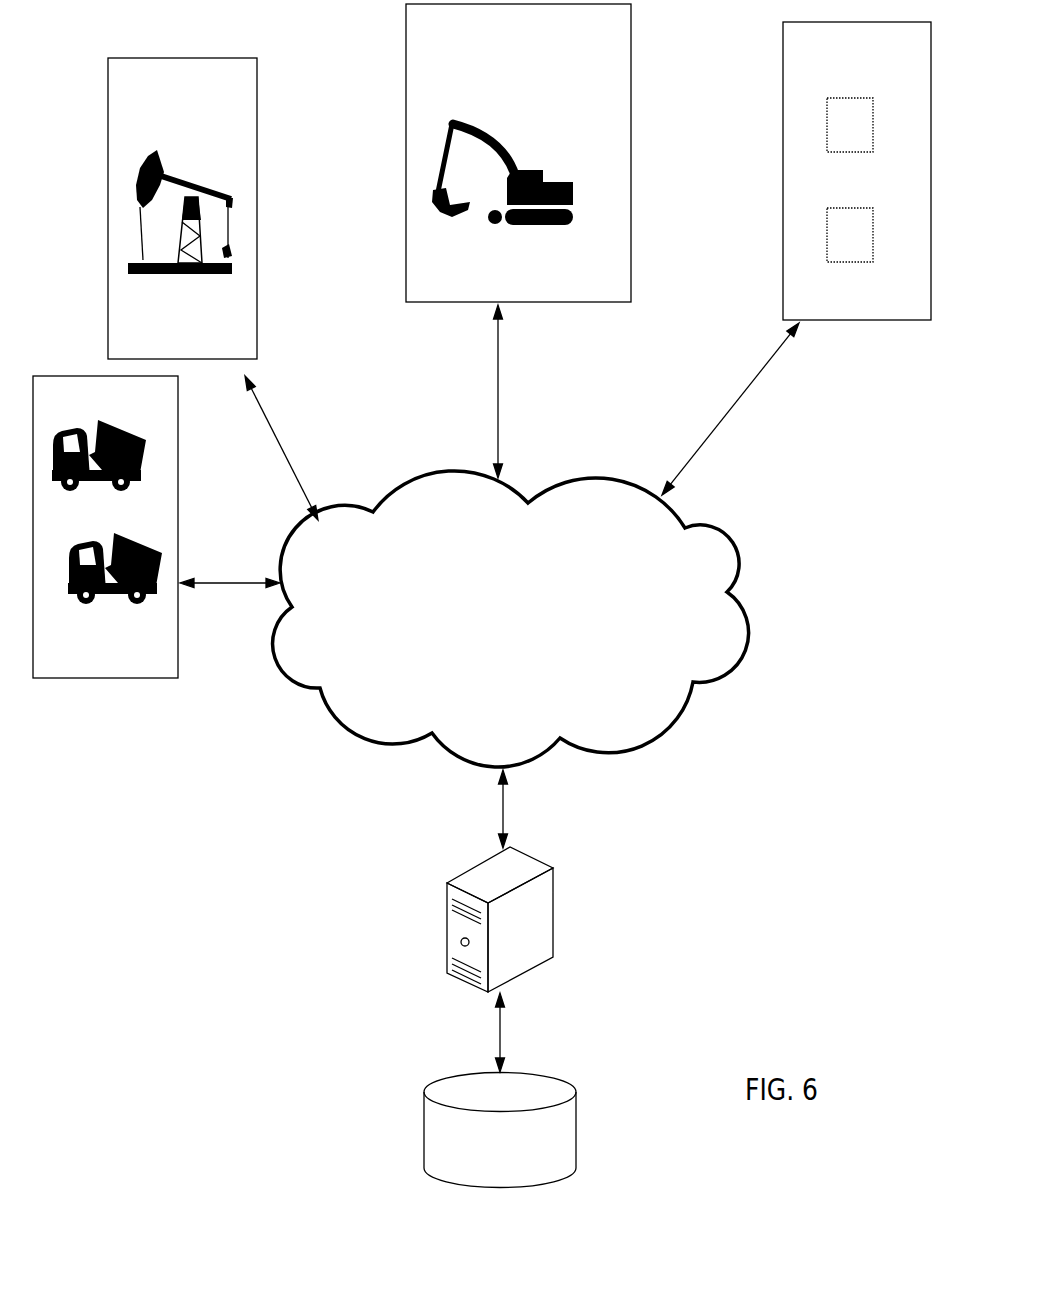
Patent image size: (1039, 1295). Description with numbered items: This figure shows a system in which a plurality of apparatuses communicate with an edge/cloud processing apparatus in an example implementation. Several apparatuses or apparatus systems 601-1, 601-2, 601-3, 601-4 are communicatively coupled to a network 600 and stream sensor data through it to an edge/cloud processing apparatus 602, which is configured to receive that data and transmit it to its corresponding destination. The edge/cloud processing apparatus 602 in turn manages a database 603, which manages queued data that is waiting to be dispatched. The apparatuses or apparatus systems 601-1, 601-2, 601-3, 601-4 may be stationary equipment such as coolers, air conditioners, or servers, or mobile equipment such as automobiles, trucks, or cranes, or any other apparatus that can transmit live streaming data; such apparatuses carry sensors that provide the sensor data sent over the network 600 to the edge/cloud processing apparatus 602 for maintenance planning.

The network 600 is at (535, 647).
The apparatus or apparatus system 601-1 is at (235, 87).
The apparatus or apparatus system 601-2 is at (611, 49).
The apparatus or apparatus system 601-3 is at (907, 55).
The apparatus or apparatus system 601-4 is at (160, 405).
The edge/cloud processing apparatus 602 is at (538, 931).
The database 603 is at (520, 1161).